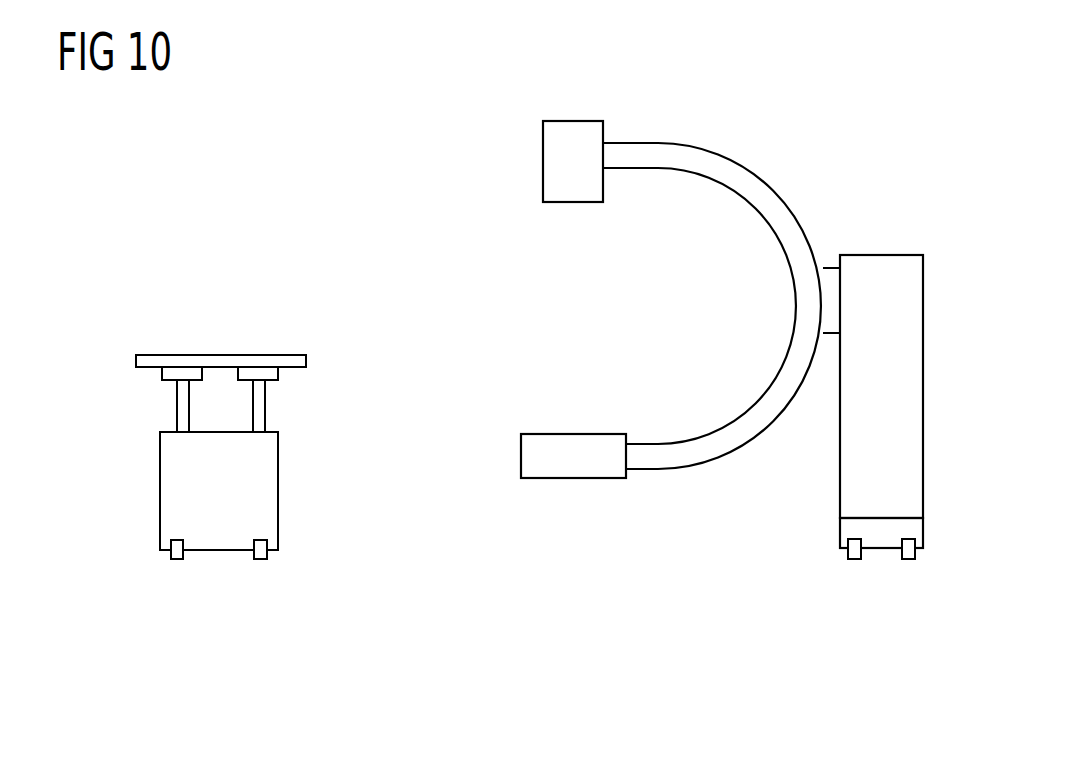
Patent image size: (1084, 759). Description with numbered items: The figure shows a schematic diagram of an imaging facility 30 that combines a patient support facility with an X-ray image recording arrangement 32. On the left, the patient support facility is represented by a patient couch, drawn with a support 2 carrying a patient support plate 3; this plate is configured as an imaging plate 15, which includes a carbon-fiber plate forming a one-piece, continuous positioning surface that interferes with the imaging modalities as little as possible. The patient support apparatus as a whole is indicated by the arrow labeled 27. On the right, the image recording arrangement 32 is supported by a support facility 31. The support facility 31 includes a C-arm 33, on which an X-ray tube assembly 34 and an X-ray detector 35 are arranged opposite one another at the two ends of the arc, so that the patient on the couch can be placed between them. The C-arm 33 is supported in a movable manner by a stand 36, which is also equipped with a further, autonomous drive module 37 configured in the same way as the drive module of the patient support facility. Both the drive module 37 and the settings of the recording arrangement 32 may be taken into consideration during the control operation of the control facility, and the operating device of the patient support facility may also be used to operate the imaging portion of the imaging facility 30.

The support 2 is at (160, 489).
The patient support plate 3 is at (313, 362).
The imaging plate 15 is at (136, 360).
The patient support apparatus 27 is at (296, 579).
The imaging facility 30 is at (733, 580).
The support facility 31 is at (900, 232).
The image recording arrangement 32 is at (527, 186).
The C-arm 33 is at (753, 176).
The X-ray tube assembly 34 is at (543, 126).
The X-ray detector 35 is at (567, 480).
The stand 36 is at (840, 467).
The drive module 37 is at (840, 527).